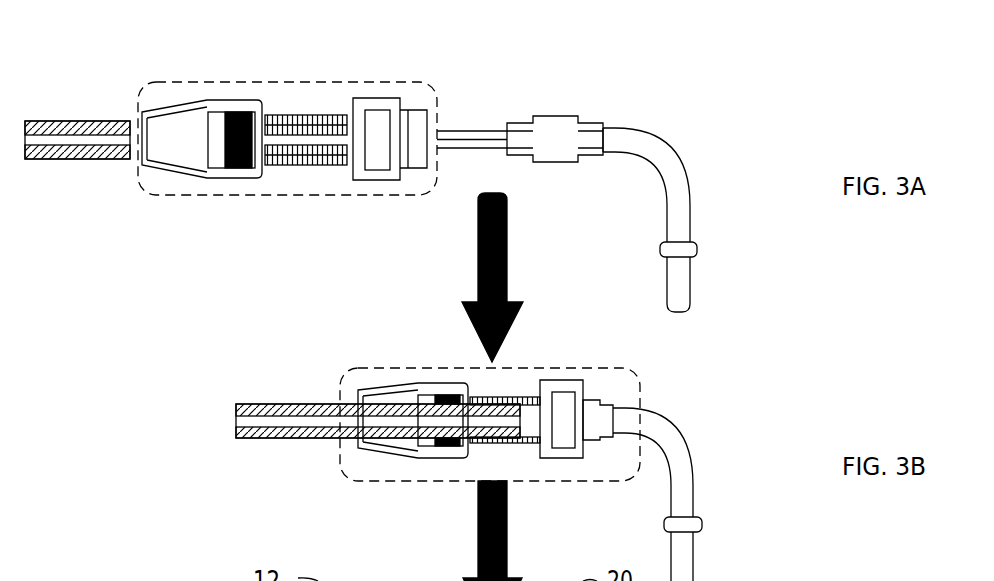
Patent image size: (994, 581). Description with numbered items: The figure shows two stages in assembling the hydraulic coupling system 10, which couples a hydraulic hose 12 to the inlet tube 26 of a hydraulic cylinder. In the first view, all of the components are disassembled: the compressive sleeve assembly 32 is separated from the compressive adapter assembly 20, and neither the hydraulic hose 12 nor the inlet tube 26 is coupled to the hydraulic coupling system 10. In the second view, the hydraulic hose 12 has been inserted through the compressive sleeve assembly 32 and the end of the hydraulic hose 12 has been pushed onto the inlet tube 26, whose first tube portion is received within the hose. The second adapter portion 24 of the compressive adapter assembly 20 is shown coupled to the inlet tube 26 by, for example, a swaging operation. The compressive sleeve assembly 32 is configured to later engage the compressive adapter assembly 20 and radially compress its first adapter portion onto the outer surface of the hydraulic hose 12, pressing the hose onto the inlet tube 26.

In FIG. 3A, the hydraulic coupling system 10 is at (437, 105).
In FIG. 3B, the hydraulic coupling system 10 is at (640, 393).
In FIG. 3A, the hydraulic hose 12 is at (117, 121).
In FIG. 3B, the hydraulic hose 12 is at (313, 403).
In FIG. 3A, the compressive adapter assembly 20 is at (378, 97).
In FIG. 3B, the compressive adapter assembly 20 is at (560, 375).
In FIG. 3A, the second adapter portion 24 is at (520, 139).
In FIG. 3B, the second adapter portion 24 is at (590, 398).
In FIG. 3A, the inlet tube 26 is at (682, 288).
In FIG. 3B, the inlet tube 26 is at (682, 560).
In FIG. 3A, the compressive sleeve assembly 32 is at (208, 100).
In FIG. 3B, the compressive sleeve assembly 32 is at (413, 380).